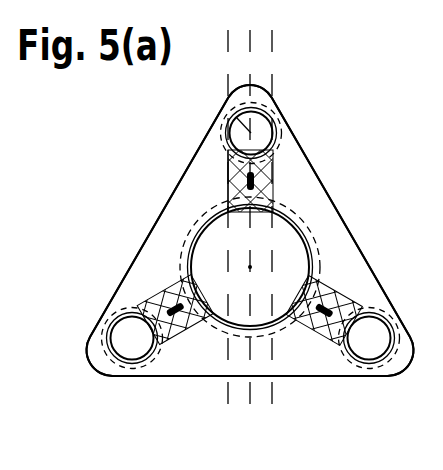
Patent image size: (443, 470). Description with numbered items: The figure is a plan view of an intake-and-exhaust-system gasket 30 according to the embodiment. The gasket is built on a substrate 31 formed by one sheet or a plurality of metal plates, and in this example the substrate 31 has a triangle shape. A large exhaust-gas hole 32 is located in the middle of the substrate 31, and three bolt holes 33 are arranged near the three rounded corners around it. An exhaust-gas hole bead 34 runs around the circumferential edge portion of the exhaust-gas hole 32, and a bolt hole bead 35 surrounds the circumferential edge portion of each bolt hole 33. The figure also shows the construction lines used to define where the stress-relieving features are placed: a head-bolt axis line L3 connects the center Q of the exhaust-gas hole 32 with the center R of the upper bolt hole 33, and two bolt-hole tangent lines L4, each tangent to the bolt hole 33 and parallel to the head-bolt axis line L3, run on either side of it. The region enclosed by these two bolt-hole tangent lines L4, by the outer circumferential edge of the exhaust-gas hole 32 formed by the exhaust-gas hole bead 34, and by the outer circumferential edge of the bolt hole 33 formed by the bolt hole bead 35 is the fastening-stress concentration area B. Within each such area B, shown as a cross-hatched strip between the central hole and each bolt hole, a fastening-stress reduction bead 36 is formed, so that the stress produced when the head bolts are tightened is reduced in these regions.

The intake-and-exhaust-system gasket 30 is at (218, 97).
The substrate 31 is at (322, 184).
The exhaust-gas hole 32 is at (292, 244).
The bolt hole 33 is at (271, 128).
The exhaust-gas hole bead 34 is at (293, 212).
The bolt hole bead 35 is at (269, 108).
The fastening-stress reduction bead 36 is at (229, 185).
The center of the bolt hole R is at (230, 127).
The fastening-stress concentration area B is at (227, 167).
The center of the exhaust-gas hole Q is at (250, 267).
The head-bolt axis line L3 is at (251, 399).
The bolt-hole tangent line L4 is at (227, 398).